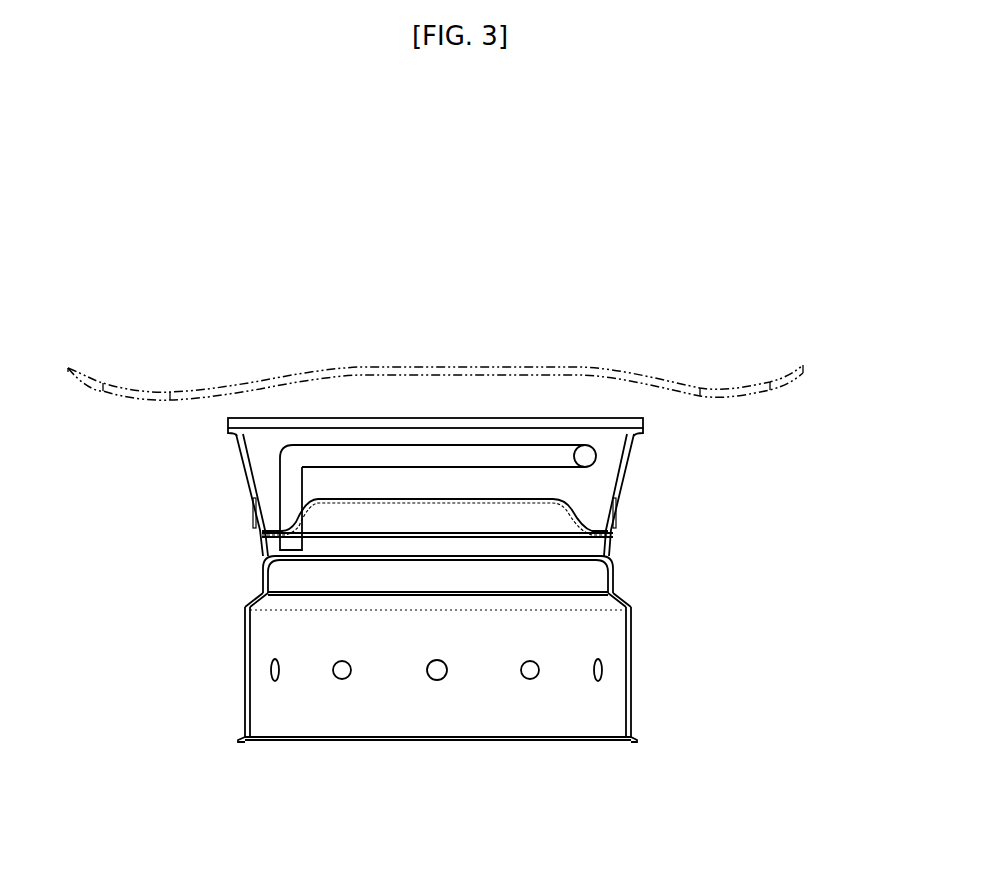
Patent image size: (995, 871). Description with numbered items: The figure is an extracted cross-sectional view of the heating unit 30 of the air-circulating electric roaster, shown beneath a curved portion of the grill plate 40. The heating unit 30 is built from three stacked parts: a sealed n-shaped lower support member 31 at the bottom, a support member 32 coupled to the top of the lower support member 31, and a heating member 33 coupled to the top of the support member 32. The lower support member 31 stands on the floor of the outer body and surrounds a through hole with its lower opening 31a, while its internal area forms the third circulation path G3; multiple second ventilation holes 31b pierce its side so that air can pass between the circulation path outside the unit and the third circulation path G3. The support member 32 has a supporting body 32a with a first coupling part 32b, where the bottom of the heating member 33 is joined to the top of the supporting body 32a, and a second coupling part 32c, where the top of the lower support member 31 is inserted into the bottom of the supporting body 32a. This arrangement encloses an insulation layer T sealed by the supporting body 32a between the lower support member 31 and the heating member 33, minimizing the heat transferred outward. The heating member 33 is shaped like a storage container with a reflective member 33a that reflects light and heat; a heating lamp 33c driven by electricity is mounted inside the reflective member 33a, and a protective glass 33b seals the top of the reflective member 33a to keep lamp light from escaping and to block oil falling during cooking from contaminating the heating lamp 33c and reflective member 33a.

The grill plate 40 is at (433, 365).
The heating unit 30 is at (482, 554).
The heating member 33 is at (490, 403).
The reflective member 33a is at (603, 460).
The protective glass 33b is at (347, 418).
The heating lamp 33c is at (485, 453).
The support member 32 is at (428, 533).
The supporting body 32a is at (255, 565).
The first coupling part 32b is at (257, 522).
The second coupling part 32c is at (255, 598).
The lower support member 31 is at (495, 724).
The lower opening 31a is at (248, 740).
The second ventilation holes 31b is at (350, 670).
The insulation layer T is at (452, 552).
The third circulation path G3 is at (455, 650).